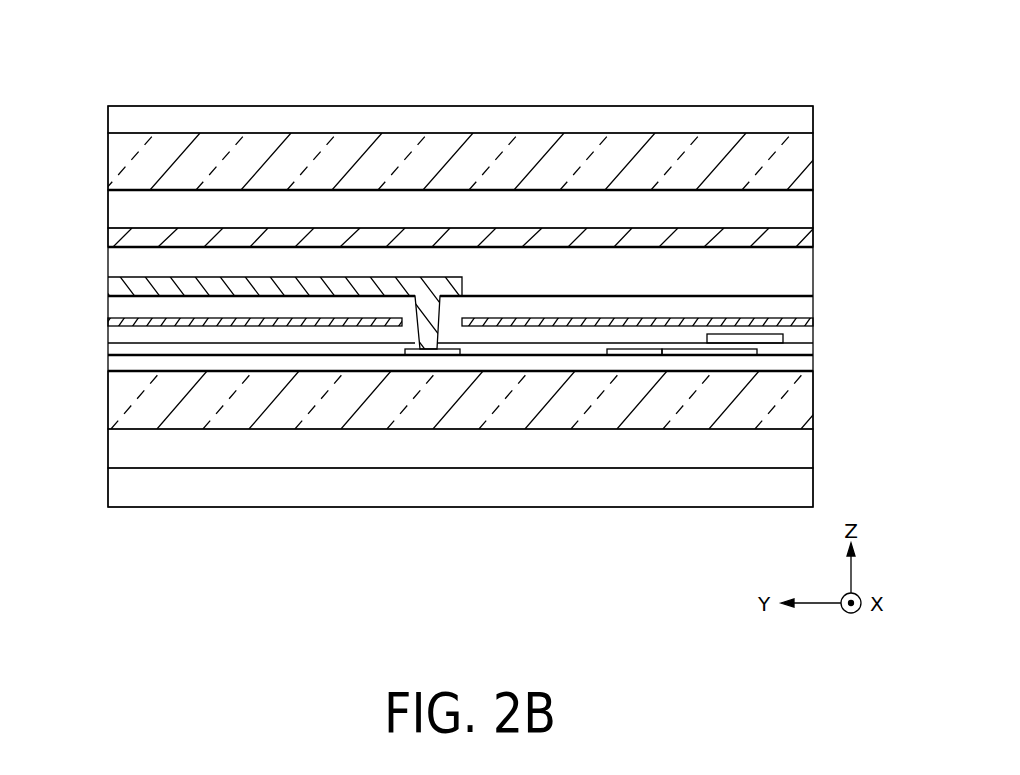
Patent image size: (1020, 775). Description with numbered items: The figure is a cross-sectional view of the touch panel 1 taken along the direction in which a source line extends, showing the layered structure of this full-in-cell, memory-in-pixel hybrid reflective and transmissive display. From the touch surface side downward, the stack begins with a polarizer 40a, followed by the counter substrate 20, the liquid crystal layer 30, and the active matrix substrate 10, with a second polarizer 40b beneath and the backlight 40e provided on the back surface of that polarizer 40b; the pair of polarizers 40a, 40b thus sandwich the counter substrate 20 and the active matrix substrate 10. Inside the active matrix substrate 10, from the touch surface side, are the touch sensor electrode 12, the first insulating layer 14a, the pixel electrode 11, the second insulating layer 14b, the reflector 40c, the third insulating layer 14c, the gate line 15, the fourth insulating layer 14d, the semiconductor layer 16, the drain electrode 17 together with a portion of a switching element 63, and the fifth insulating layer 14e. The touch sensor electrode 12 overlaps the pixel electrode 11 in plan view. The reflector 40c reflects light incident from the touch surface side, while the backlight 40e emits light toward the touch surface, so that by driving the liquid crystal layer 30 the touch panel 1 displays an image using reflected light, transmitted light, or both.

The touch panel 1 is at (231, 84).
The active matrix substrate 10 is at (875, 192).
The pixel electrode 11 is at (462, 284).
The touch sensor electrode 12 is at (714, 228).
The first insulating layer 14a is at (737, 247).
The second insulating layer 14b is at (740, 297).
The third insulating layer 14c is at (710, 320).
The fourth insulating layer 14d is at (798, 344).
The fifth insulating layer 14e is at (720, 360).
The gate line 15 is at (783, 337).
The semiconductor layer 16 is at (737, 352).
The drain electrode 17 is at (643, 357).
The counter substrate 20 is at (112, 157).
The liquid crystal layer 30 is at (112, 215).
The polarizer 40a is at (112, 122).
The polarizer 40b is at (110, 458).
The reflector 40c is at (132, 322).
The backlight 40e is at (110, 497).
The switching element 63 is at (432, 357).